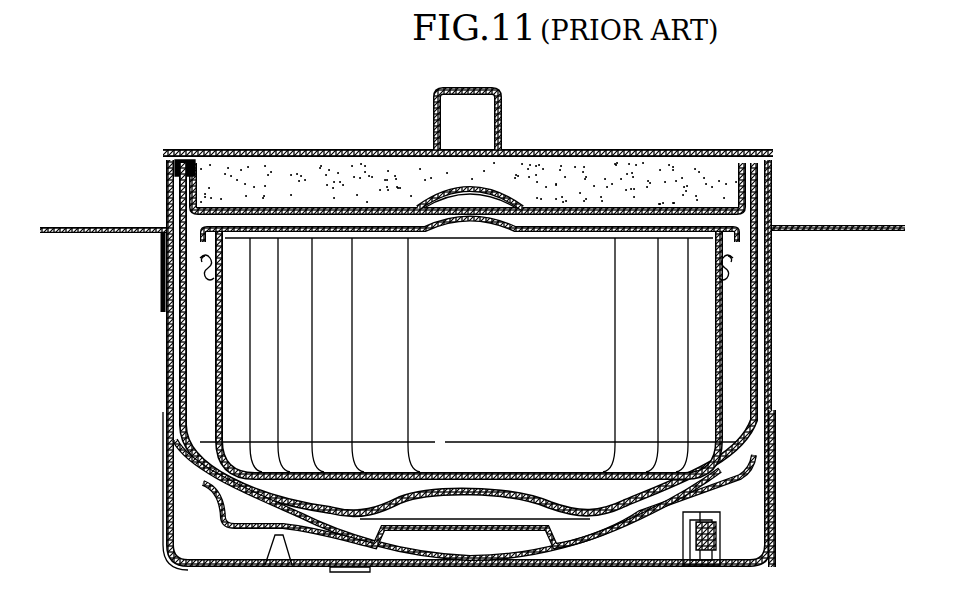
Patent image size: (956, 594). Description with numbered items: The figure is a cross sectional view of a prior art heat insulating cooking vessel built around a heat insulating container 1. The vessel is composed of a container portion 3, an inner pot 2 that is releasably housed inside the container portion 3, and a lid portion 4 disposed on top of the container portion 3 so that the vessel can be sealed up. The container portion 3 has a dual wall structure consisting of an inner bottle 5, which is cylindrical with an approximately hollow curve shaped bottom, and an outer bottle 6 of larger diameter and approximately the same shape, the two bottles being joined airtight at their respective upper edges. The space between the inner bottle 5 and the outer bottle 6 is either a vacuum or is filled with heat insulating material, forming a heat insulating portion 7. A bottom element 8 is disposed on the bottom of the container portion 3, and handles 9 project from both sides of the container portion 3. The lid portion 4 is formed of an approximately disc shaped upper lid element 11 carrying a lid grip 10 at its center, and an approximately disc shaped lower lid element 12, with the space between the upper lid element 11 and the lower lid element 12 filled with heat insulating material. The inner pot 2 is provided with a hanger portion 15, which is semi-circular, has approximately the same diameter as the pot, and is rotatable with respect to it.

The heat insulating container 1 is at (499, 129).
The inner pot 2 is at (737, 227).
The container portion 3 is at (170, 360).
The lid portion 4 is at (598, 148).
The inner bottle 5 is at (758, 396).
The outer bottle 6 is at (768, 357).
The heat insulating portion 7 is at (758, 322).
The bottom element 8 is at (778, 490).
The handles 9 is at (51, 226).
The lid grip 10 is at (481, 102).
The upper lid element 11 is at (331, 150).
The lower lid element 12 is at (258, 206).
The hanger portion 15 is at (202, 266).